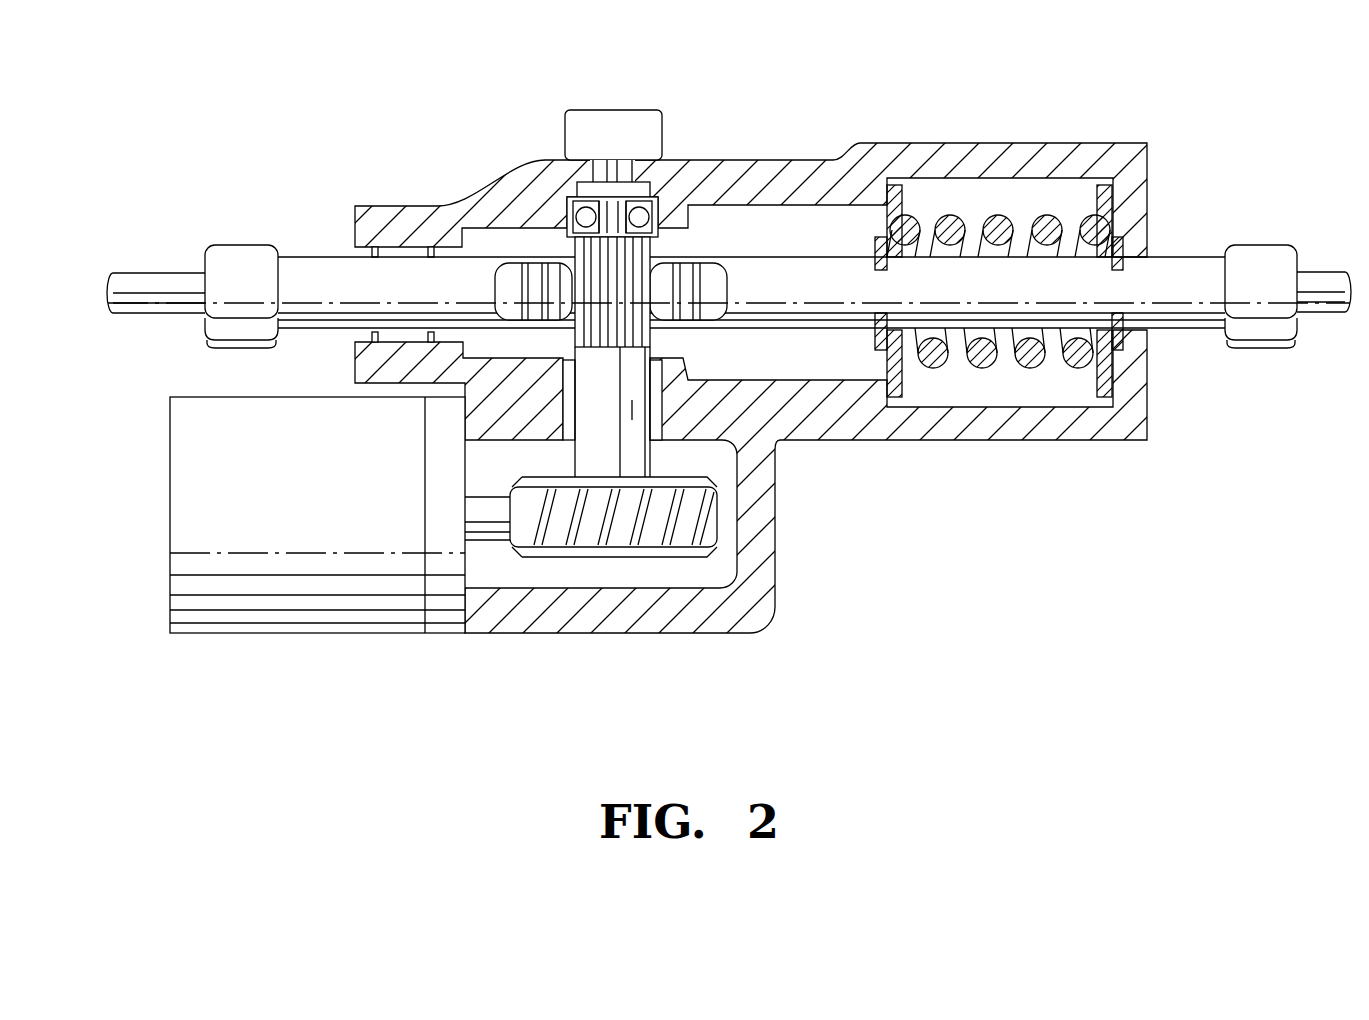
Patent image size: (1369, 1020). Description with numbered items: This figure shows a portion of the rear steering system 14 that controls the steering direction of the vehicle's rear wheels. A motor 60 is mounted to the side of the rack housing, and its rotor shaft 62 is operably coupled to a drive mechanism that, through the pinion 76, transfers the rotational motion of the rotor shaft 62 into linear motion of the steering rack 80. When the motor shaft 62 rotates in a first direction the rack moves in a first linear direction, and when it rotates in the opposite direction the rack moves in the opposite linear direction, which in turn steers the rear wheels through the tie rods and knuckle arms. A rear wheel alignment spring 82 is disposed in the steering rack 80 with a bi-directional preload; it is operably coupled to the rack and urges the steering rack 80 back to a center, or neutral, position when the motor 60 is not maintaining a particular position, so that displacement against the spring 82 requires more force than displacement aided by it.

The rear steering system 14 is at (1171, 638).
The motor 60 is at (185, 425).
The rotor shaft 62 is at (487, 517).
The pinion 76 is at (580, 263).
The steering rack 80 is at (1185, 262).
The rear wheel alignment spring 82 is at (1033, 365).